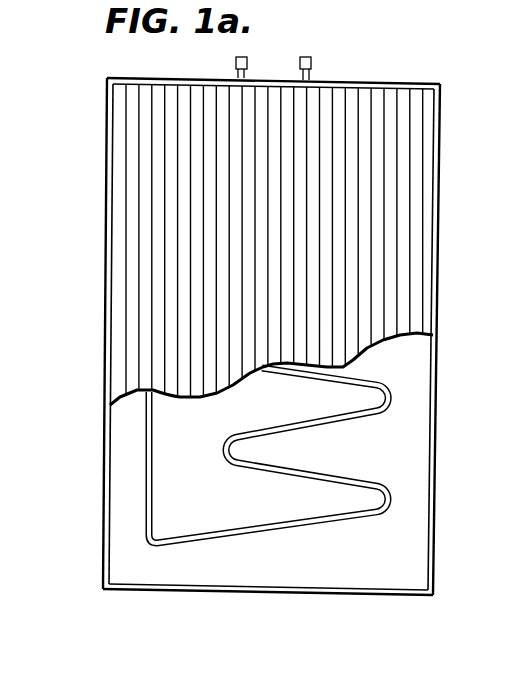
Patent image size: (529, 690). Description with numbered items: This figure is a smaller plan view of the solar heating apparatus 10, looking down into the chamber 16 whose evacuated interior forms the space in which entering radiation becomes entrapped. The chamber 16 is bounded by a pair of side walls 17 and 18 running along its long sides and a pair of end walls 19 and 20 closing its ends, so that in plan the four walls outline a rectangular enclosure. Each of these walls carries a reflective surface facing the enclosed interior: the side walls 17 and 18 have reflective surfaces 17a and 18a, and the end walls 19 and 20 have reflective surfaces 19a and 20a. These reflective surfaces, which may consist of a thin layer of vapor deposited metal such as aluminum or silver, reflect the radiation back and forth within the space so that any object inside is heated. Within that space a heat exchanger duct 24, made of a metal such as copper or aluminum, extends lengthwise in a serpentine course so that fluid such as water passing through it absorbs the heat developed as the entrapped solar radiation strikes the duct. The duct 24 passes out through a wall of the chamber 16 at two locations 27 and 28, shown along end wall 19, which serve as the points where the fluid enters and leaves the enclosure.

The solar collector panel 10 is at (400, 281).
The chamber 16 is at (442, 310).
The side wall 17 is at (106, 323).
The reflective surface 17a is at (108, 377).
The side wall 18 is at (439, 350).
The reflective surface 18a is at (433, 367).
The end wall 19 is at (398, 83).
The reflective surface 19a is at (417, 92).
The end wall 20 is at (275, 594).
The reflective surface 20a is at (160, 582).
The heat exchanger duct 24 is at (340, 425).
The duct wall passage 27 is at (238, 80).
The duct wall passage 28 is at (310, 78).